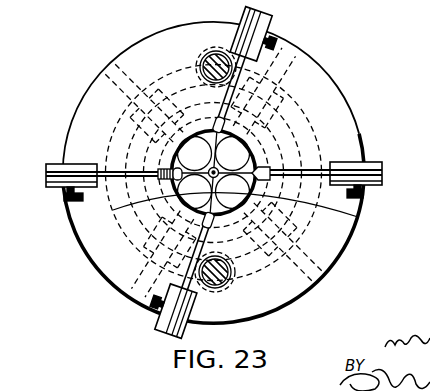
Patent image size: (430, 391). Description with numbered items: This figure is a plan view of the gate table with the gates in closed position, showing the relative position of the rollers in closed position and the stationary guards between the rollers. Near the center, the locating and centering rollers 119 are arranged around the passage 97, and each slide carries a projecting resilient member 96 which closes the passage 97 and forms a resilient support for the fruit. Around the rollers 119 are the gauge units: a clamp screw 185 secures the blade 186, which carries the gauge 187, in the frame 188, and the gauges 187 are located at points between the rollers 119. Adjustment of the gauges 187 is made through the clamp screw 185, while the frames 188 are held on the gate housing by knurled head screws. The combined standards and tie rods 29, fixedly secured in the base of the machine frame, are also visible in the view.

The combined standards and tie rods 29 is at (212, 61).
The projecting resilient member 96 is at (306, 124).
The passage 97 is at (223, 211).
The locating and centering roller 119 is at (131, 147).
The clamp screw 185 is at (67, 199).
The blade 186 is at (312, 147).
The gauge 187 is at (207, 222).
The frame 188 is at (56, 170).